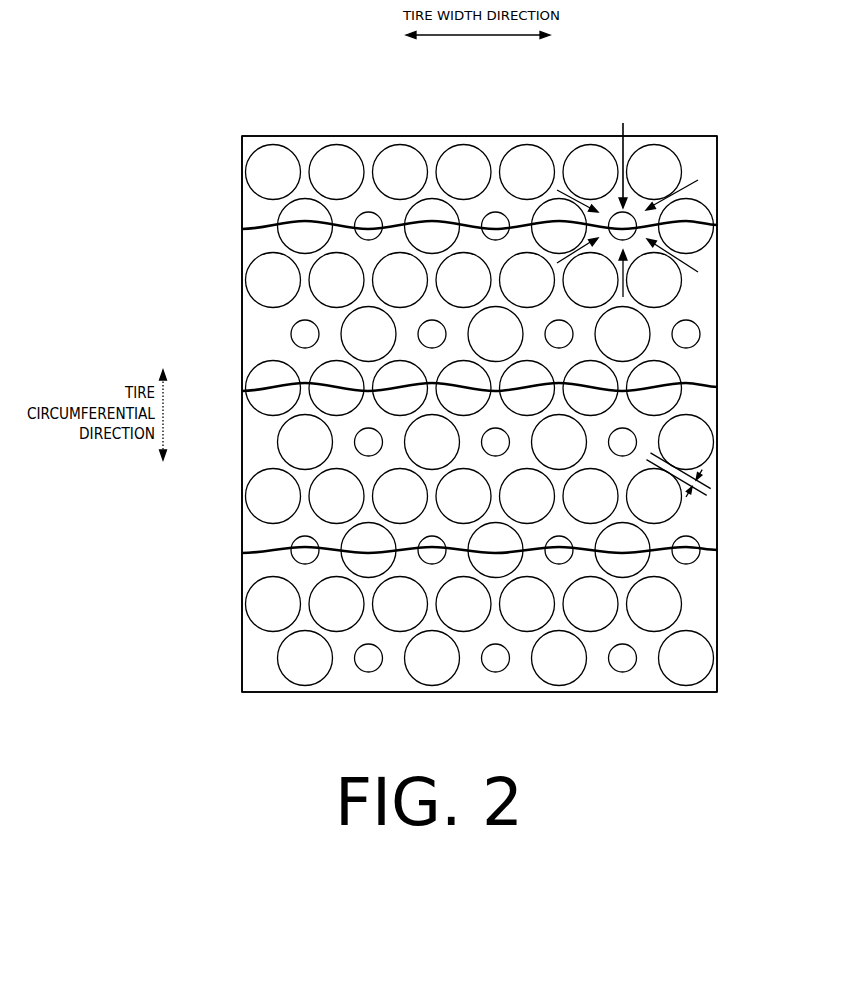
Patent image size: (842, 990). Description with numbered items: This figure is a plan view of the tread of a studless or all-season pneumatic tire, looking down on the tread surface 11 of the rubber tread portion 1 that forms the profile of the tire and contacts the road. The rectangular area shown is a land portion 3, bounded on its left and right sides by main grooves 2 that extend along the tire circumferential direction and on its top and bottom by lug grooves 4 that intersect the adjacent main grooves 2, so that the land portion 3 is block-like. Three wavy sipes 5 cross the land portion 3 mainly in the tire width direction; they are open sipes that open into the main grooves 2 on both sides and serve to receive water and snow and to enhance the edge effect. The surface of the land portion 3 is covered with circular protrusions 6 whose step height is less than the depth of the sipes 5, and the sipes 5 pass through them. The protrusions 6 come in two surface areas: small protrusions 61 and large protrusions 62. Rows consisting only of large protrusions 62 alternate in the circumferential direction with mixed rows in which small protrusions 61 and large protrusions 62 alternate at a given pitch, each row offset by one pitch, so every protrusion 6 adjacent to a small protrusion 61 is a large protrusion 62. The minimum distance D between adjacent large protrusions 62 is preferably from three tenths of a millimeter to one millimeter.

The tread portion 1 is at (650, 92).
The tread surface 11 is at (703, 136).
The main groove 2 is at (216, 426).
The land portion 3 is at (703, 286).
The lug groove 4 is at (484, 118).
The sipe 5 is at (700, 219).
The protrusion 6 is at (480, 415).
The small protrusion 61 is at (368, 212).
The large protrusion 62 is at (258, 172).
The minimum distance between adjacent large protrusions D is at (707, 490).